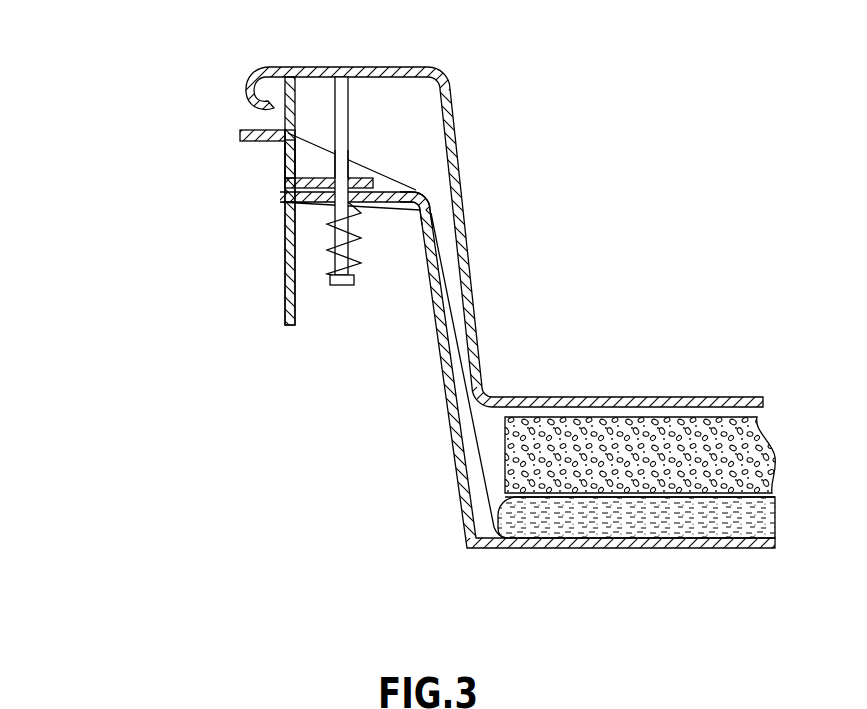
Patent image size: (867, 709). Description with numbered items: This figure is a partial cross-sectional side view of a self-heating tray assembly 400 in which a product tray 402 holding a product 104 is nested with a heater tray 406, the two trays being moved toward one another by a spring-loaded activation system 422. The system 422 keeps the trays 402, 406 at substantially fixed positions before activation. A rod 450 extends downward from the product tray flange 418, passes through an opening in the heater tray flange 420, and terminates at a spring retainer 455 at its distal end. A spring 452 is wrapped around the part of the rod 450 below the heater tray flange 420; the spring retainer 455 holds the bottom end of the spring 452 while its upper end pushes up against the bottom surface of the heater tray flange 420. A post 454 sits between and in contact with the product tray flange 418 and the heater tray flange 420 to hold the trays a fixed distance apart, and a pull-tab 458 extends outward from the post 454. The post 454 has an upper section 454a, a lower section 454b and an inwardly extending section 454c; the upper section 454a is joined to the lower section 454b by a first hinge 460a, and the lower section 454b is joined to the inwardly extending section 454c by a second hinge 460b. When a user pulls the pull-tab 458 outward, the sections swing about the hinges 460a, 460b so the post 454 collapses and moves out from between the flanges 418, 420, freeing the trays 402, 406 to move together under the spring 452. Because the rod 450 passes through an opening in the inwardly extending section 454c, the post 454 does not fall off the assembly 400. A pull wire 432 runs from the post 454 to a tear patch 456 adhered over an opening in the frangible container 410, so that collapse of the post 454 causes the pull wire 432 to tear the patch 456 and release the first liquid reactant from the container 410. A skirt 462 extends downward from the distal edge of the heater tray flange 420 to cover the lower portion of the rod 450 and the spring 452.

The self-heating tray assembly 400 is at (428, 308).
The product 104 is at (705, 430).
The product tray 402 is at (476, 323).
The heater tray 406 is at (489, 356).
The frangible container 410 is at (770, 517).
The product tray flange 418 is at (378, 67).
The heater tray flange 420 is at (405, 188).
The spring-loaded activation system 422 is at (272, 169).
The pull wire 432 is at (358, 165).
The rod 450 is at (350, 110).
The spring 452 is at (352, 261).
The post 454 is at (344, 169).
The upper section 454a is at (285, 122).
The lower section 454b is at (290, 172).
The inwardly extending section 454c is at (370, 183).
The spring retainer 455 is at (330, 284).
The tear patch 456 is at (517, 505).
The pull-tab 458 is at (240, 134).
The first hinge 460a is at (288, 143).
The second hinge 460b is at (287, 200).
The skirt 462 is at (285, 298).